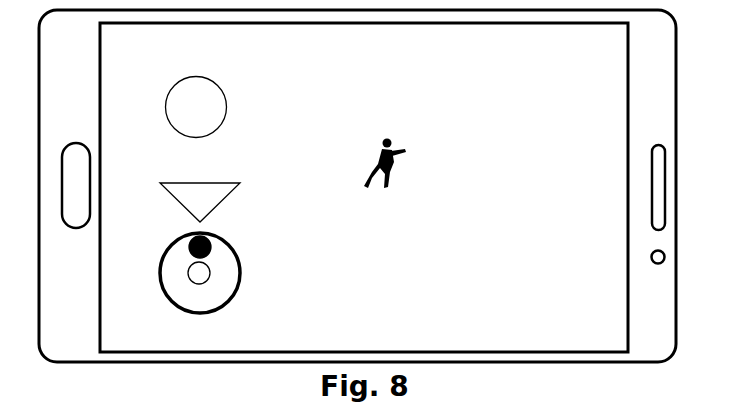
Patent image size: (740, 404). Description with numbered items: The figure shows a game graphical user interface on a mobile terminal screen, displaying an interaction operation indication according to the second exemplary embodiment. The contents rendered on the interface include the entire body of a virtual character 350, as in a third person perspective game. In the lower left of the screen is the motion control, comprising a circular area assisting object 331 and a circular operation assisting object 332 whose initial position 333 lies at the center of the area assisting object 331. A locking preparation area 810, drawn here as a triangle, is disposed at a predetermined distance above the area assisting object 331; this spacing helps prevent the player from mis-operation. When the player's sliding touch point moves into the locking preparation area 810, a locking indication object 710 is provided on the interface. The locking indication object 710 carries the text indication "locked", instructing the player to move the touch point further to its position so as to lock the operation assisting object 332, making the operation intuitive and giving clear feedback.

The locking indication object 710 is at (226, 107).
The locking preparation area 810 is at (170, 183).
The area assisting object 331 is at (240, 263).
The operation assisting object 332 is at (212, 246).
The initial position 333 is at (211, 262).
The virtual character 350 is at (403, 152).